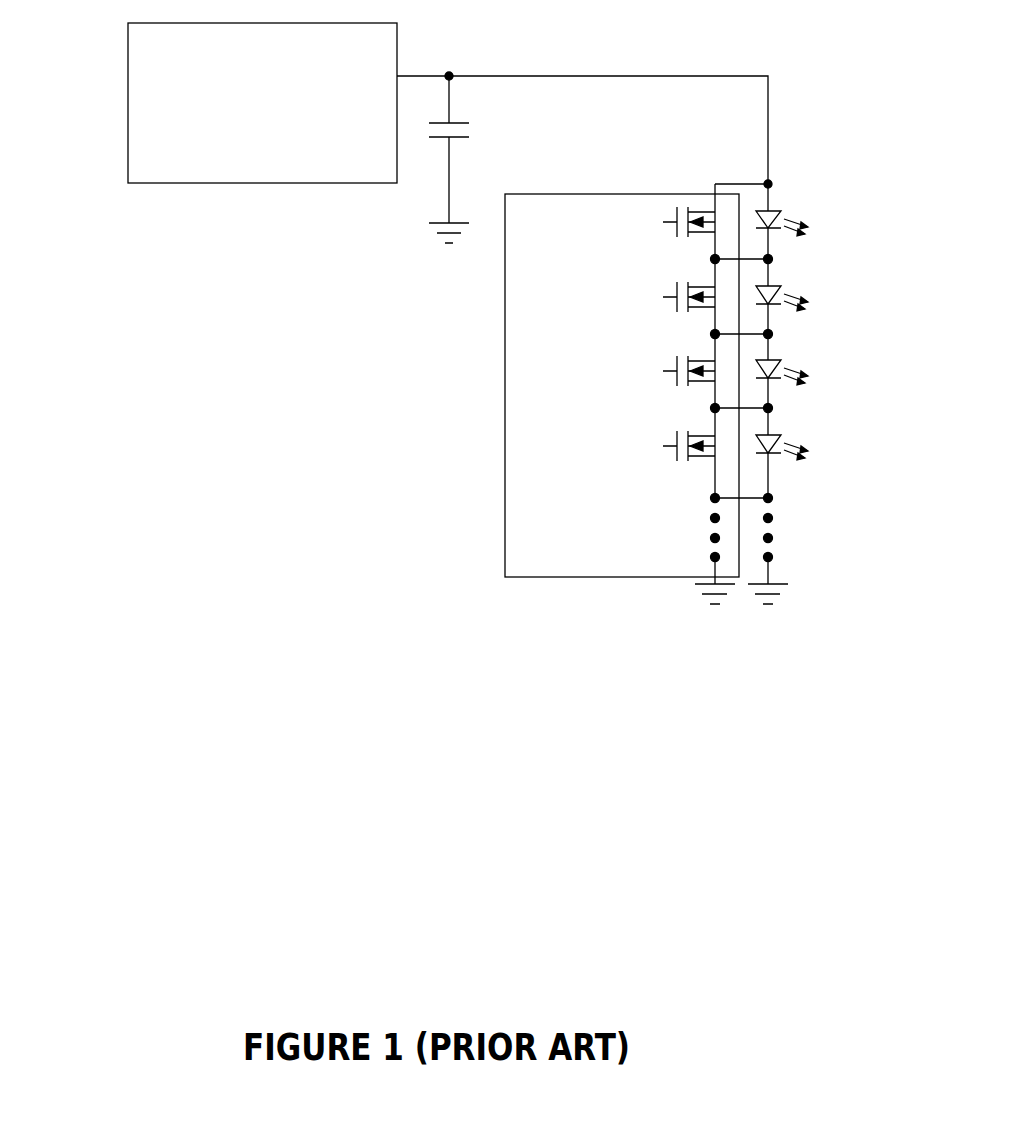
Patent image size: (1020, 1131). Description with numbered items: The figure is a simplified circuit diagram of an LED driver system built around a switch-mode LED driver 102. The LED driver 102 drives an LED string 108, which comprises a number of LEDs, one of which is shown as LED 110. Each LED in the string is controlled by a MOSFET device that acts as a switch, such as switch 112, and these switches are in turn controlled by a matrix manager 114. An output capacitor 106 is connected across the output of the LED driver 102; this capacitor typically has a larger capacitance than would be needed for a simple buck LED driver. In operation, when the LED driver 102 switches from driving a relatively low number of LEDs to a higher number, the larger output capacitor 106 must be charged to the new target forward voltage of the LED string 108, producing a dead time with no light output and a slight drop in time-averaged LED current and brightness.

The switch-mode LED driver 102 is at (125, 105).
The output capacitor 106 is at (522, 132).
The LED string 108 is at (737, 262).
The LED 110 is at (800, 364).
The MOSFET device 112 is at (677, 362).
The matrix manager 114 is at (503, 388).